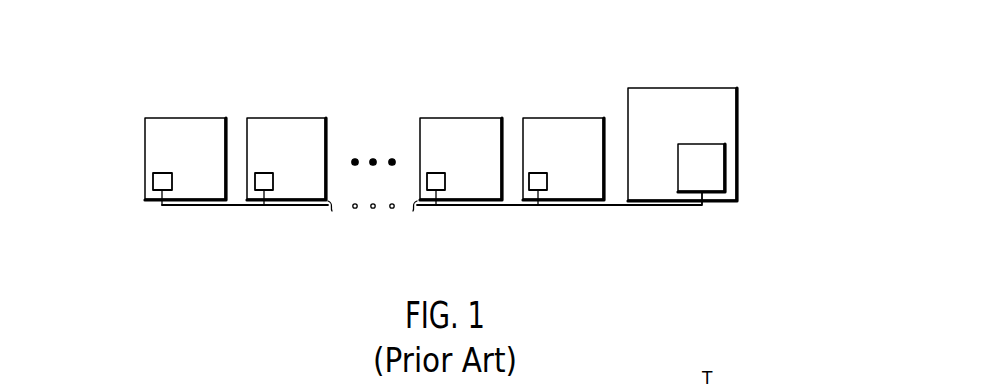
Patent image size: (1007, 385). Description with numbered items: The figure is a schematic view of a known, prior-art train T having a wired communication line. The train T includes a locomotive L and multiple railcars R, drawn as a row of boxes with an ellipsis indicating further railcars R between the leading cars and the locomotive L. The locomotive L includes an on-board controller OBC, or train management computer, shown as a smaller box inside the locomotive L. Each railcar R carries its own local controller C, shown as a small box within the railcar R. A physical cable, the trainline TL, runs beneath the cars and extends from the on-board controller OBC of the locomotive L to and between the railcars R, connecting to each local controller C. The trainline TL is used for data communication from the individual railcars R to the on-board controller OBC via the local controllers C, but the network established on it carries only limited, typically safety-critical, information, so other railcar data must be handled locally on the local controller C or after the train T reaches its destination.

The railcar R is at (542, 118).
The local controller C is at (548, 184).
The trainline TL is at (232, 205).
The train T is at (562, 93).
The locomotive L is at (706, 70).
The on-board controller OBC is at (725, 168).